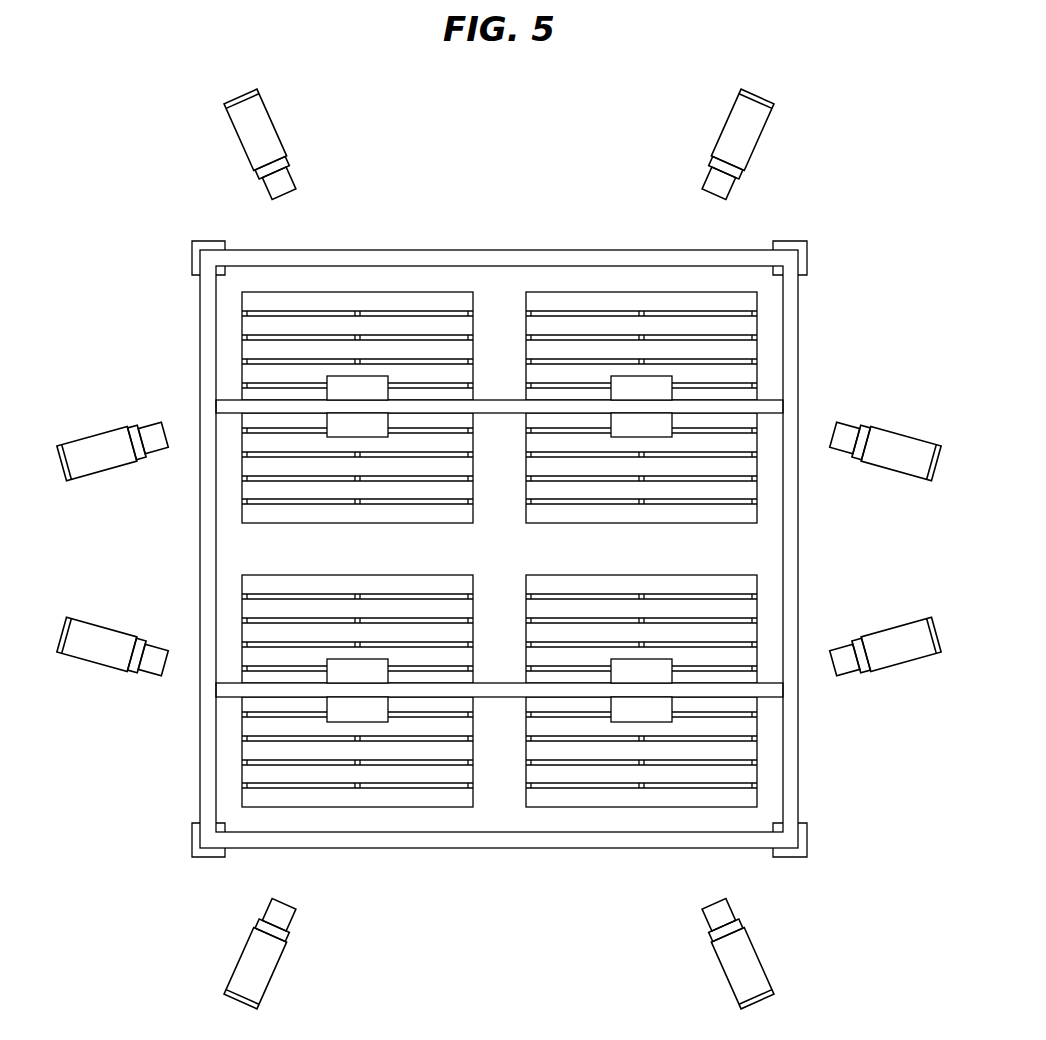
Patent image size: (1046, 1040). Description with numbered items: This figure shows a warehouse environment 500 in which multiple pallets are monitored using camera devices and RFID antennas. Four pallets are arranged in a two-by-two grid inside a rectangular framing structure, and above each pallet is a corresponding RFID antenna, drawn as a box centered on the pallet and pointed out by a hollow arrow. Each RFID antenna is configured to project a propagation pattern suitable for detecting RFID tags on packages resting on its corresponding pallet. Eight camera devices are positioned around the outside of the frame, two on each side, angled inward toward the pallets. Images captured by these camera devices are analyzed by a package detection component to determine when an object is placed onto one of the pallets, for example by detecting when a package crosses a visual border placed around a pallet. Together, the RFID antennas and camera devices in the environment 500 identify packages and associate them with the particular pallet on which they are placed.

The environment 500 is at (663, 80).